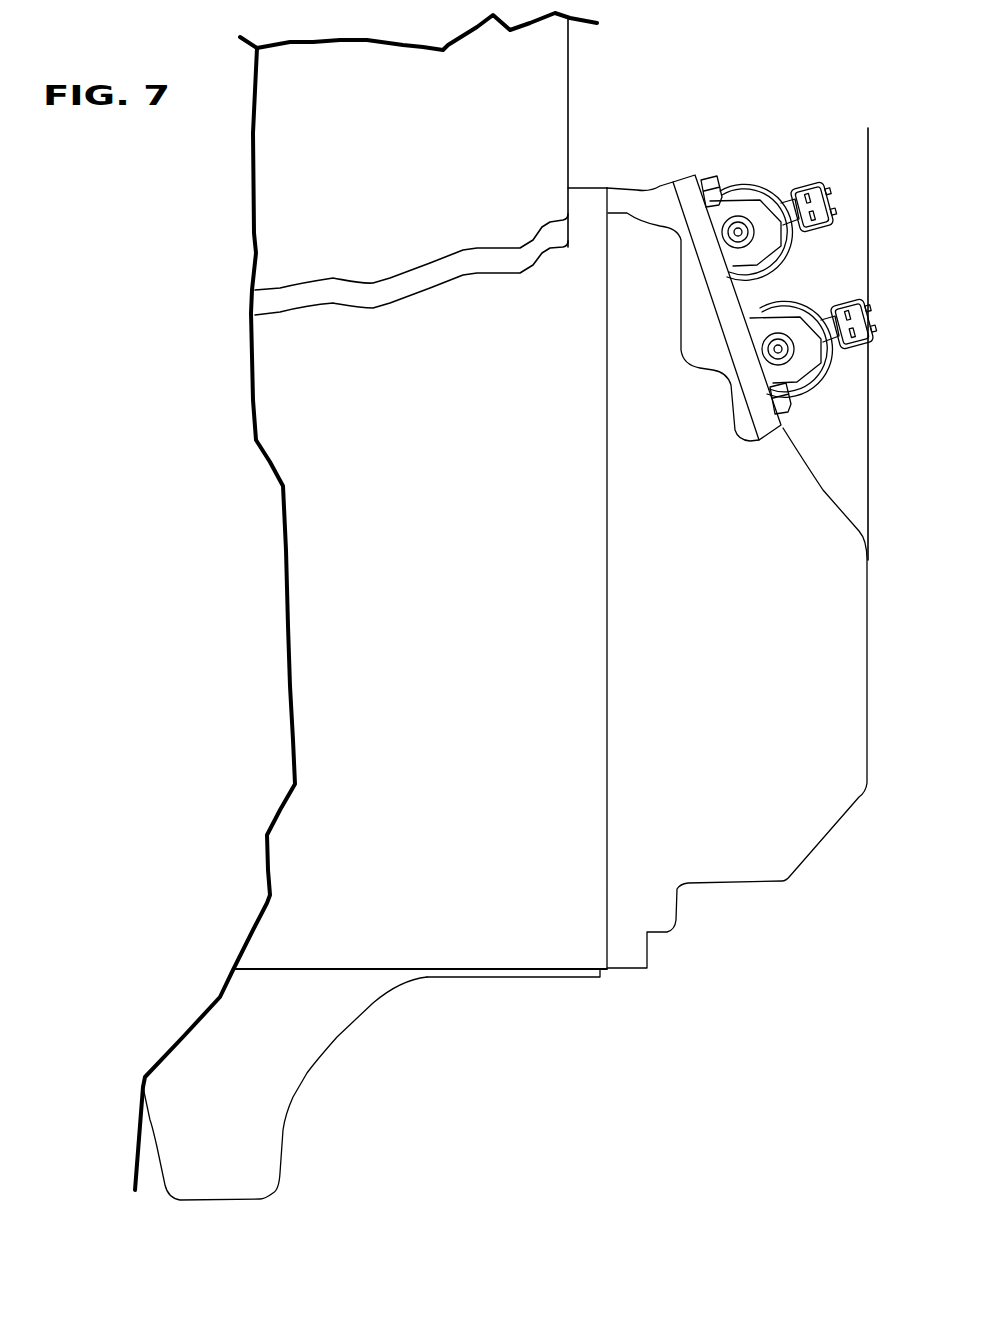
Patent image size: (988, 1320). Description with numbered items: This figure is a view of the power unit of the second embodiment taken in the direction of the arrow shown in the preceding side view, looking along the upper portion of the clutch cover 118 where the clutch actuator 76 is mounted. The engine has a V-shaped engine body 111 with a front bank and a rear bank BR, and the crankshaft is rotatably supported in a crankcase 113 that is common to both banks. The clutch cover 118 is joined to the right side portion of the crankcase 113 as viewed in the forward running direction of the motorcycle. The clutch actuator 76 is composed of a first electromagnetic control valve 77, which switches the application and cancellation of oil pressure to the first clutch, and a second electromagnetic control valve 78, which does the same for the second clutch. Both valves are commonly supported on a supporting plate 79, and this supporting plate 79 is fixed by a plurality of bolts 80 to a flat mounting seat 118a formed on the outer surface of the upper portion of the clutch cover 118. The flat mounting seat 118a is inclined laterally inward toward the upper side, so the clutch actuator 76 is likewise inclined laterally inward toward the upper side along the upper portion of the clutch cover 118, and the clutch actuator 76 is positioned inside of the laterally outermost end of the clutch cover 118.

The rear bank BR is at (578, 77).
The clutch actuator 76 is at (794, 231).
The first electromagnetic control valve 77 is at (805, 205).
The second electromagnetic control valve 78 is at (732, 212).
The supporting plate 79 is at (740, 355).
The bolts 80 is at (707, 178).
The engine body 111 is at (448, 986).
The crankcase 113 is at (546, 933).
The clutch cover 118 is at (746, 865).
The flat mounting seat 118a is at (718, 305).